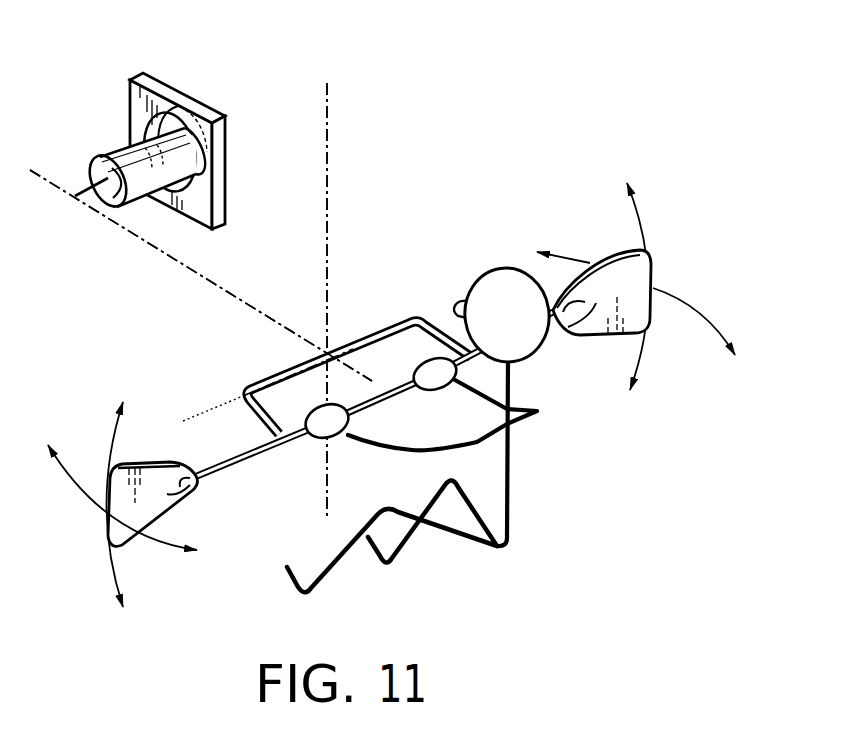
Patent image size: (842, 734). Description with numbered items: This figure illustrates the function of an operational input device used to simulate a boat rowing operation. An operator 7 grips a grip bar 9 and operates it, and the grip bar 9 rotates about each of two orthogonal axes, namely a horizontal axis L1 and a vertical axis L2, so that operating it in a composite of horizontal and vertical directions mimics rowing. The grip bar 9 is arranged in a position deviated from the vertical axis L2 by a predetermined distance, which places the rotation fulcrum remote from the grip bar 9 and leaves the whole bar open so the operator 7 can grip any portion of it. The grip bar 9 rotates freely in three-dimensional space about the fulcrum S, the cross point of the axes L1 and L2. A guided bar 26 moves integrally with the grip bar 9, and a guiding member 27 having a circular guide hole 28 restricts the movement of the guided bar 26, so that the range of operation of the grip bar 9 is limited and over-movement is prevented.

The operator 7 is at (500, 287).
The grip bar 9 is at (231, 469).
The guided bar 26 is at (113, 157).
The guiding member 27 is at (188, 53).
The circular guide hole 28 is at (172, 120).
The horizontal axis L1 is at (192, 271).
The vertical axis L2 is at (328, 148).
The fulcrum S is at (329, 352).